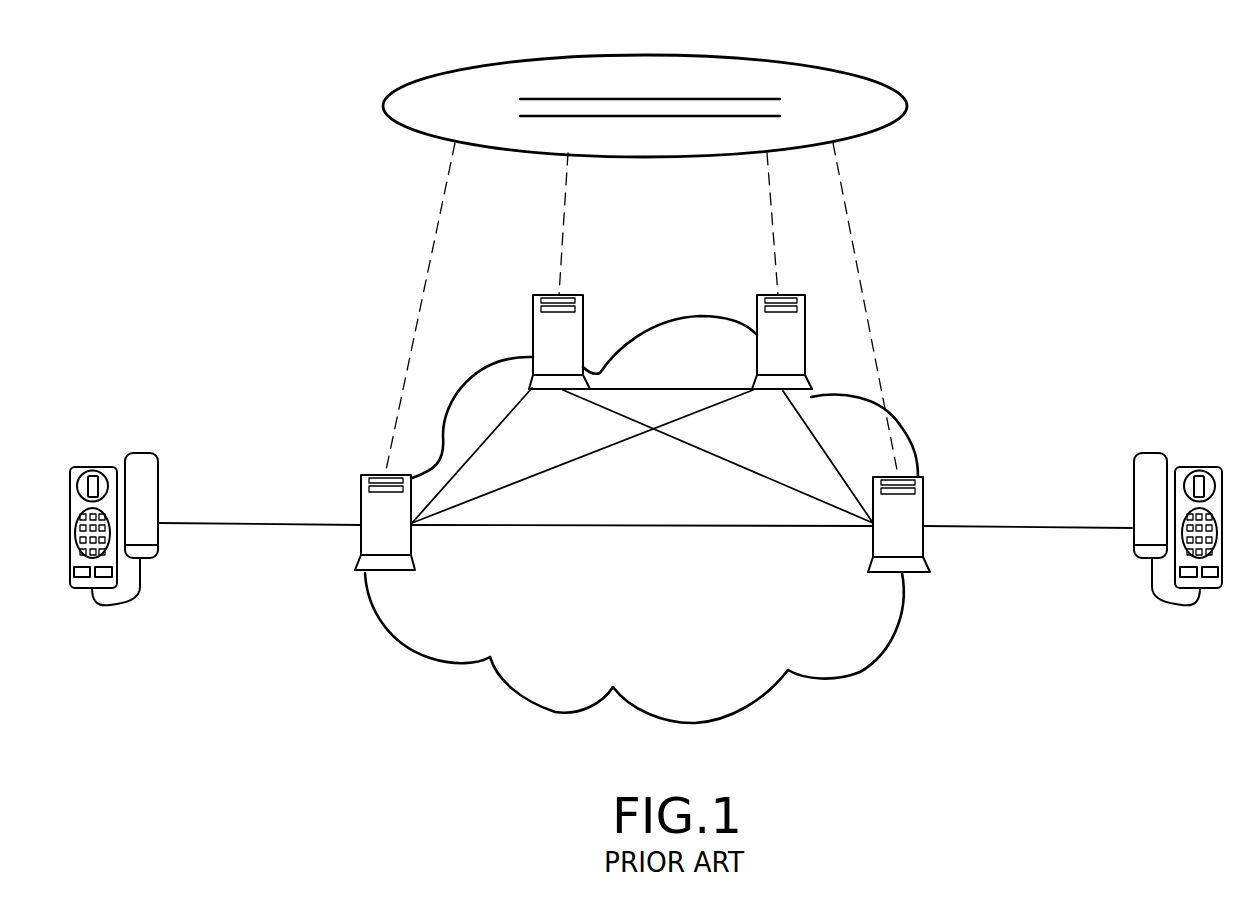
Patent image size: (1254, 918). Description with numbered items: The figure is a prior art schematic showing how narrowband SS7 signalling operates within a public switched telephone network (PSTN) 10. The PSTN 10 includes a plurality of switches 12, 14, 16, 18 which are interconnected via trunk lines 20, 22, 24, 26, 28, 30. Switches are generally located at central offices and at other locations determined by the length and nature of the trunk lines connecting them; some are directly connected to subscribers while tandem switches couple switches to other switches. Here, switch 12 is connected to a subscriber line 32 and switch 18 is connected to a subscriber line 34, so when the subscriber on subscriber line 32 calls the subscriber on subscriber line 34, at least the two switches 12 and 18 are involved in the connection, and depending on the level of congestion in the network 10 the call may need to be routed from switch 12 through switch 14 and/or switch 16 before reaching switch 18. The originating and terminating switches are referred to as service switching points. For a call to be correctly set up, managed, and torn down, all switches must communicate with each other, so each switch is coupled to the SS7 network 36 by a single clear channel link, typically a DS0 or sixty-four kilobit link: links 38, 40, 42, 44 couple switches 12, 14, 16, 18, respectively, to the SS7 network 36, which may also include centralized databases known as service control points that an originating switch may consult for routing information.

The public switched telephone network 10 is at (877, 660).
The switch 12 is at (357, 550).
The switch 14 is at (581, 308).
The switch 16 is at (808, 311).
The switch 18 is at (925, 497).
The trunk line 20 is at (507, 413).
The trunk line 22 is at (580, 457).
The trunk line 24 is at (642, 523).
The trunk line 26 is at (642, 388).
The trunk line 28 is at (720, 453).
The trunk line 30 is at (813, 447).
The subscriber line 32 is at (238, 523).
The subscriber line 34 is at (1043, 528).
The SS7 network 36 is at (746, 60).
The link 38 is at (441, 220).
The link 40 is at (562, 222).
The link 42 is at (771, 202).
The link 44 is at (847, 208).